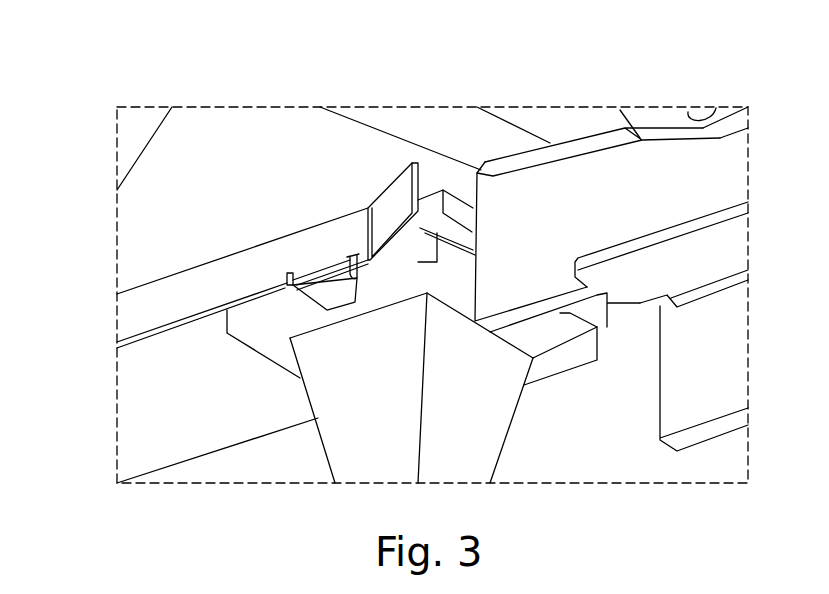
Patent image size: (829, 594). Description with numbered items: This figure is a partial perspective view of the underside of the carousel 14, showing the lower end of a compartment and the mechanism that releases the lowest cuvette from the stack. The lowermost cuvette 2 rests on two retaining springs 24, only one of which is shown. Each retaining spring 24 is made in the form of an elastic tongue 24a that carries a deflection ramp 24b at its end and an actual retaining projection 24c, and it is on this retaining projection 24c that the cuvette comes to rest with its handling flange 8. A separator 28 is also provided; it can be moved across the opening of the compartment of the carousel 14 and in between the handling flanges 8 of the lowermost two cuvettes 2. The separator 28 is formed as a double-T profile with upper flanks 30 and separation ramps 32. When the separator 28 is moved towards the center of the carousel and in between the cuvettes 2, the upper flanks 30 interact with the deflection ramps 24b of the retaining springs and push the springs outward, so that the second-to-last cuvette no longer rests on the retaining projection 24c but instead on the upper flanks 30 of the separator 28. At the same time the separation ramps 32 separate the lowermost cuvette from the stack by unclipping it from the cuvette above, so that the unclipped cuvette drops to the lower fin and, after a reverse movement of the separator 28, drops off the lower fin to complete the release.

The cuvette 2 is at (347, 417).
The handling flange 8 is at (270, 337).
The carousel 14 is at (143, 155).
The retaining spring 24 is at (168, 292).
The elastic tongue 24a is at (253, 272).
The deflection ramp 24b is at (394, 206).
The retaining projection 24c is at (293, 287).
The separator 28 is at (641, 285).
The upper flank 30 is at (575, 158).
The separation ramp 32 is at (671, 128).